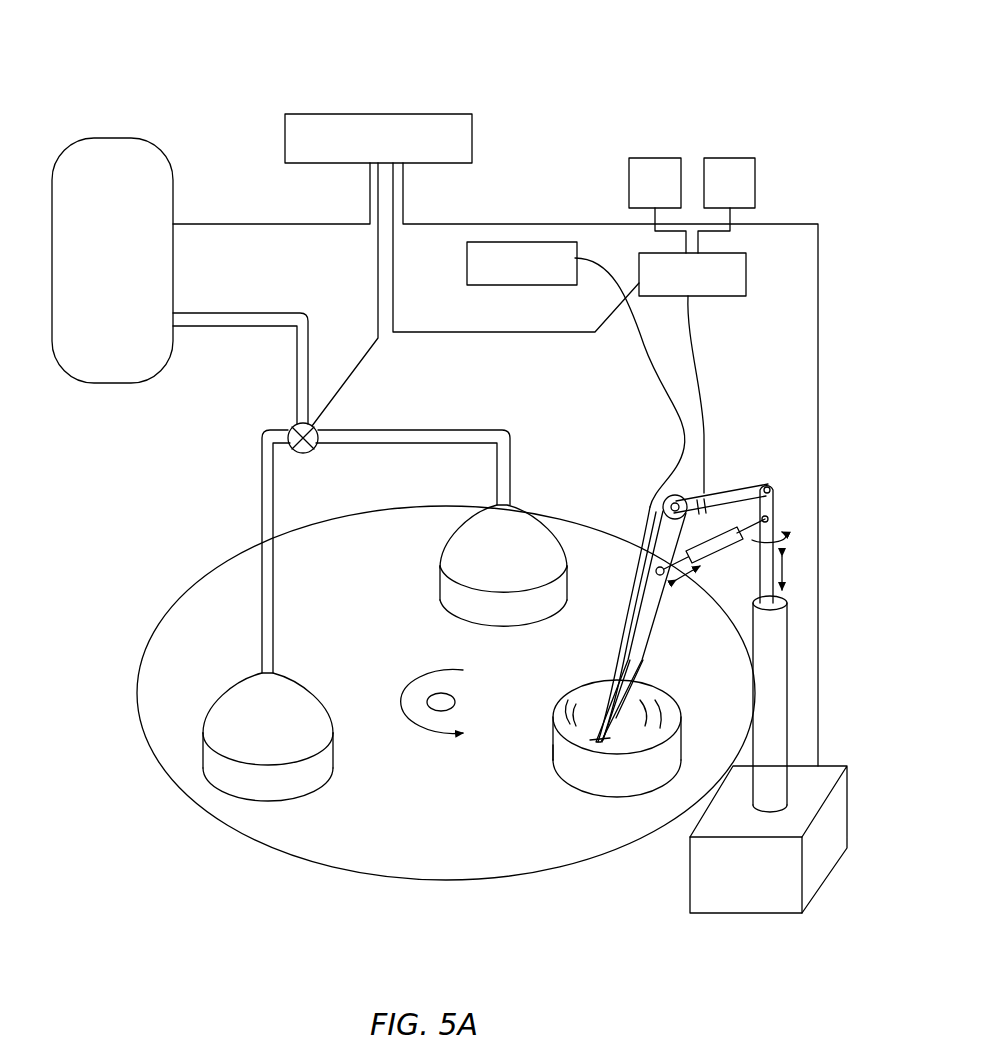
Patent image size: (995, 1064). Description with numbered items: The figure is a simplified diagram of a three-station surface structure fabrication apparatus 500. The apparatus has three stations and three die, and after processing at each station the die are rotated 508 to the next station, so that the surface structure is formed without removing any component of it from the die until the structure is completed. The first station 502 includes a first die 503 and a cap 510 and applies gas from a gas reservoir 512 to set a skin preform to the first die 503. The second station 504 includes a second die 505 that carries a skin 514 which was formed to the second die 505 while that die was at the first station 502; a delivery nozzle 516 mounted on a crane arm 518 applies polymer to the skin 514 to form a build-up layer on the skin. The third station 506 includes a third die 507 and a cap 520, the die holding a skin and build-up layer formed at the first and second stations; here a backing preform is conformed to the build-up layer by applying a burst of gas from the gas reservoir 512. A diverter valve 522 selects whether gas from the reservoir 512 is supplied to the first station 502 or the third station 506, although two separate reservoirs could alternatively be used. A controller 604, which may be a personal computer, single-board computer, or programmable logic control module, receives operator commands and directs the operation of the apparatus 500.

The three-station surface structure fabrication apparatus 500 is at (556, 80).
The gas reservoir 512 is at (92, 138).
The controller 604 is at (378, 114).
The diverter valve 522 is at (292, 424).
The third station 506 is at (598, 540).
The cap 520 is at (458, 526).
The third die 507 is at (440, 582).
The rotation of the die 508 is at (400, 682).
The cap 510 is at (237, 690).
The first die 503 is at (337, 760).
The first station 502 is at (150, 775).
The skin 514 is at (600, 700).
The delivery nozzle 516 is at (565, 714).
The second die 505 is at (552, 752).
The second station 504 is at (608, 855).
The crane arm 518 is at (643, 663).